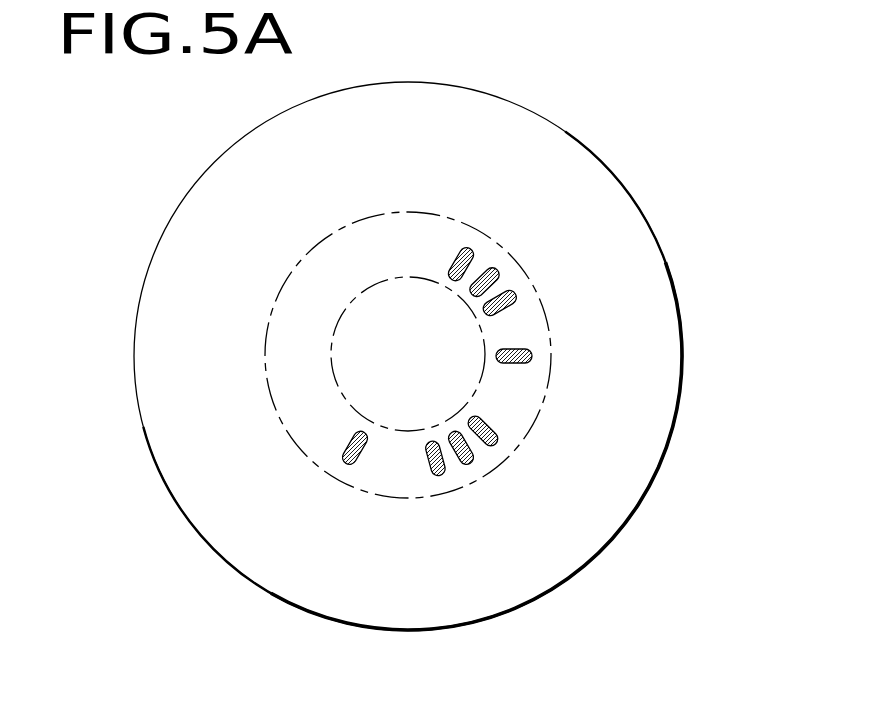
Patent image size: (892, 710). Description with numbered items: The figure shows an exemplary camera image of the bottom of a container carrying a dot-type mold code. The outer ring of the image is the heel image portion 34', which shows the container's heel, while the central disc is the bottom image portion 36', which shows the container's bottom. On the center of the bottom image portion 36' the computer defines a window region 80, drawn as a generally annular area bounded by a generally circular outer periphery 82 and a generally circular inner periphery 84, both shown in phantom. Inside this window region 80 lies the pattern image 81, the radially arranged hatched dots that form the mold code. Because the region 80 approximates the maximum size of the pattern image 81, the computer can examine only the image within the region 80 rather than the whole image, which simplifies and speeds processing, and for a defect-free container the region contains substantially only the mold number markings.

The heel image portion 34' is at (455, 356).
The bottom image portion 36' is at (410, 579).
The window region 80 is at (327, 415).
The pattern image 81 is at (565, 260).
The outer periphery 82 is at (323, 240).
The inner periphery 84 is at (345, 383).